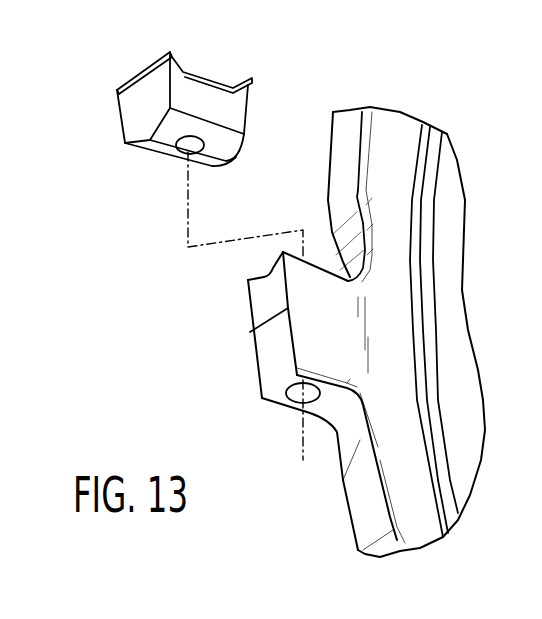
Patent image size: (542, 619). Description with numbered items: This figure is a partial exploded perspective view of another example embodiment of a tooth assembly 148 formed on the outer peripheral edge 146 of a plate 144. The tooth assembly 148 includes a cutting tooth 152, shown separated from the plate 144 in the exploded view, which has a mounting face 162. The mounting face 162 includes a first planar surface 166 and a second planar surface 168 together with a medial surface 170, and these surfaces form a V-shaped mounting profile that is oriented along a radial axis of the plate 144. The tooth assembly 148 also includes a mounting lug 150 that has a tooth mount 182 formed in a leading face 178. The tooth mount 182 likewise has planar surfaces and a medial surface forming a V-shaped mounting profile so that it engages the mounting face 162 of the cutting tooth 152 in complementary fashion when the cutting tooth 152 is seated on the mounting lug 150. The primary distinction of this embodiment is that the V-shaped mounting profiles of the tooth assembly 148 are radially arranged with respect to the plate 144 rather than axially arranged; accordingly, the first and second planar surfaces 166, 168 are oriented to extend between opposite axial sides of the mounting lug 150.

The plate 144 is at (476, 226).
The outer peripheral edge 146 is at (388, 128).
The tooth assembly 148 is at (117, 272).
The mounting lug 150 is at (280, 348).
The cutting tooth 152 is at (136, 59).
The mounting face 162 is at (170, 177).
The first planar surface 166 is at (163, 153).
The second planar surface 168 is at (228, 137).
The medial surface 170 is at (153, 137).
The leading face 178 is at (316, 250).
The tooth mount 182 is at (238, 271).